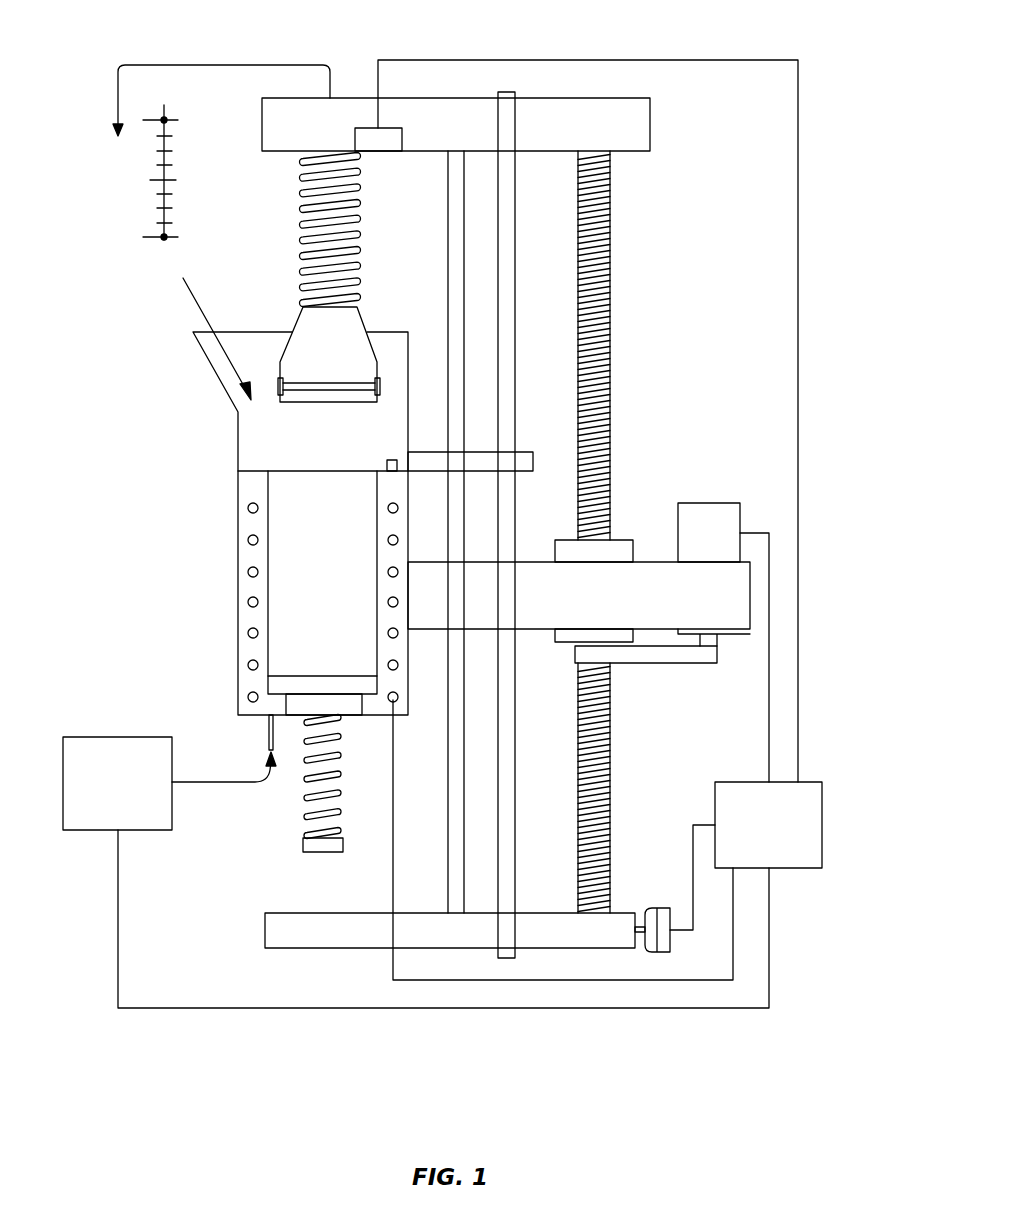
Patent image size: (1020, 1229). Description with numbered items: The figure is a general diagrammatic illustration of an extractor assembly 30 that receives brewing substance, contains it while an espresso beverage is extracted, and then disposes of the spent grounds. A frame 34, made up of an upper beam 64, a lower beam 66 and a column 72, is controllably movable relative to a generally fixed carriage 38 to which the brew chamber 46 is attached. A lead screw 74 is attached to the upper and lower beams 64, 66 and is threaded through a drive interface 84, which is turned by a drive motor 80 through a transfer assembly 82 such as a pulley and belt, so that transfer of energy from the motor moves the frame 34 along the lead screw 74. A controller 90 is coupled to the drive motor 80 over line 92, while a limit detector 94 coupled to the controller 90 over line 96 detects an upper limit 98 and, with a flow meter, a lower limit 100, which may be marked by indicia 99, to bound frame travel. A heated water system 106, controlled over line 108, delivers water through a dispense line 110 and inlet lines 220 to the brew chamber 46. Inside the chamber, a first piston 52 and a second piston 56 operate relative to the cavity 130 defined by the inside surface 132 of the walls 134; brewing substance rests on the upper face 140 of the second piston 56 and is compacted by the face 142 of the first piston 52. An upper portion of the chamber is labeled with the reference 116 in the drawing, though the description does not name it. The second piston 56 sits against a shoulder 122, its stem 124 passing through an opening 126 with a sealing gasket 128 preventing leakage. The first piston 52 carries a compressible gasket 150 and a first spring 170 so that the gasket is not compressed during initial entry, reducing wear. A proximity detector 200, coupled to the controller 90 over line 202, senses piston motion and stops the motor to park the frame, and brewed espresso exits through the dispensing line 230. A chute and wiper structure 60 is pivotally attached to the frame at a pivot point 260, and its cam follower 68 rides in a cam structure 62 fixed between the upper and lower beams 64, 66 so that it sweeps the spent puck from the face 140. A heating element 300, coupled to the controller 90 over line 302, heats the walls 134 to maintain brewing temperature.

The extractor assembly 30 is at (142, 430).
The frame 34 is at (668, 340).
The carriage 38 is at (737, 602).
The brew chamber 46 is at (212, 560).
The first piston 52 is at (295, 312).
The second piston 56 is at (295, 660).
The chute and wiper structure 60 is at (205, 357).
The cam structure 62 is at (510, 192).
The upper beam 64 is at (630, 127).
The lower beam 66 is at (622, 912).
The cam follower 68 is at (525, 451).
The column 72 is at (447, 275).
The lead screw 74 is at (592, 415).
The drive motor 80 is at (678, 533).
The transfer assembly 82 is at (650, 657).
The drive interface 84 is at (562, 635).
The controller 90 is at (825, 823).
The line 92 is at (768, 750).
The limit detector 94 is at (663, 948).
The line 96 is at (692, 840).
The upper limit 98 is at (173, 108).
The indicia 99 is at (142, 163).
The lower limit 100 is at (142, 225).
The heated water system 106 is at (97, 832).
The line 108 is at (730, 1006).
The dispense line 110 is at (215, 785).
The container top wall 116 is at (270, 486).
The shoulder 122 is at (375, 705).
The stem 124 is at (335, 815).
The opening 126 is at (293, 703).
The sealing gasket 128 is at (272, 690).
The cavity 130 is at (338, 546).
The inside surface 132 is at (361, 516).
The walls 134 is at (238, 505).
The upper face 140 is at (322, 672).
The face of the piston 142 is at (327, 407).
The gasket 150 is at (273, 382).
The first spring 170 is at (278, 195).
The proximity detector 200 is at (353, 138).
The line 202 is at (590, 58).
The inlet lines 220 is at (266, 735).
The dispensing line 230 is at (222, 62).
The pivot point 260 is at (398, 465).
The heating element 300 is at (250, 588).
The line 302 is at (653, 980).